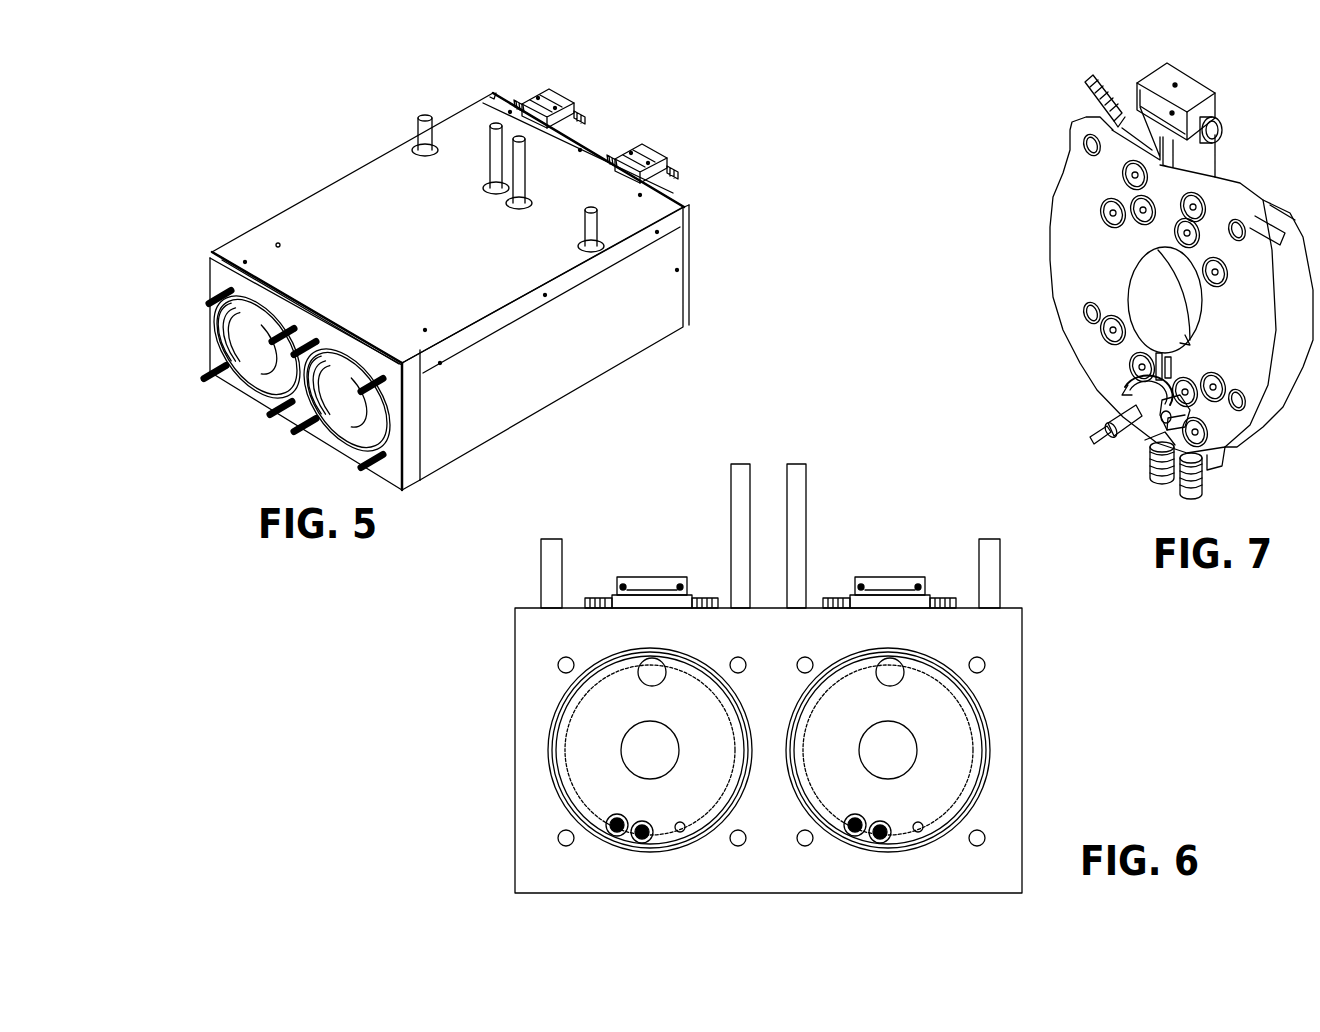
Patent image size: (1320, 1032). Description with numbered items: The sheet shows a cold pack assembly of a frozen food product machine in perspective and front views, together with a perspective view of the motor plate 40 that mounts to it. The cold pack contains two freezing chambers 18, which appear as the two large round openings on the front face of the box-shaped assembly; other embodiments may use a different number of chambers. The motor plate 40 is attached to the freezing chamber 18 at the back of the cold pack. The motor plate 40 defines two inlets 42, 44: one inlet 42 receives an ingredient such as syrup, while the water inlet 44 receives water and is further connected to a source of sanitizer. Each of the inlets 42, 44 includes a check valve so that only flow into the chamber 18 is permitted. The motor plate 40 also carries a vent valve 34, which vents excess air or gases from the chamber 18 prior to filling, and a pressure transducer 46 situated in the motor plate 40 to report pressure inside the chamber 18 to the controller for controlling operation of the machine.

In FIG. 5, the freezing chamber 18 is at (263, 378).
In FIG. 6, the freezing chamber 18 is at (580, 773).
In FIG. 5, the motor plate 40 is at (557, 105).
In FIG. 7, the motor plate 40 is at (1063, 172).
In FIG. 7, the vent valve 34 is at (1145, 82).
In FIG. 7, the pressure transducer 46 is at (1122, 420).
In FIG. 7, the inlet 42 is at (1153, 460).
In FIG. 7, the water inlet 44 is at (1188, 494).